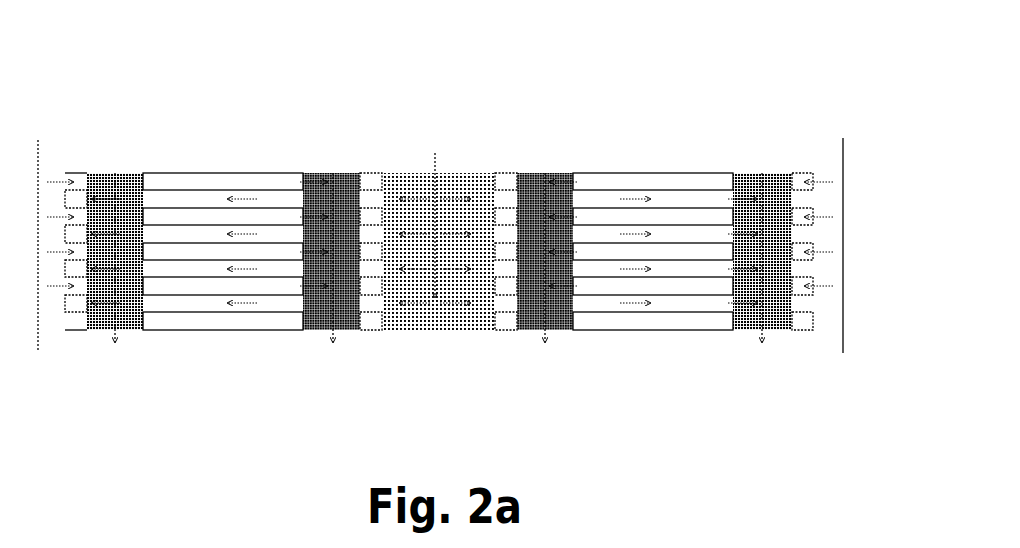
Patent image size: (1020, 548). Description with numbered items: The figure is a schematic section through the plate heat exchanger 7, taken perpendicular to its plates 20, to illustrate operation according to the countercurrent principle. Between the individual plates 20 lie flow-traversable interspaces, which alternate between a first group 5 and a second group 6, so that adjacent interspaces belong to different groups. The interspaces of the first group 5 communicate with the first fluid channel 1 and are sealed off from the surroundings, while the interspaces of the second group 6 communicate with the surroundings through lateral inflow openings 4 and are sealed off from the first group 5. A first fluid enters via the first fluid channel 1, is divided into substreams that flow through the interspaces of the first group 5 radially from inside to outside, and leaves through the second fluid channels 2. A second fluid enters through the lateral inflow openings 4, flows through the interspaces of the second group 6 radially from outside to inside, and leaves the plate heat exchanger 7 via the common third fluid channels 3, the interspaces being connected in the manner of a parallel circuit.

The first fluid channel 1 is at (467, 222).
The second fluid channels 2 is at (98, 200).
The third fluid channels 3 is at (347, 207).
The lateral inflow openings 4 is at (797, 287).
The first group of interspaces 5 is at (207, 270).
The second group of interspaces 6 is at (280, 250).
The plate heat exchanger 7 is at (822, 87).
The plates 20 is at (235, 223).